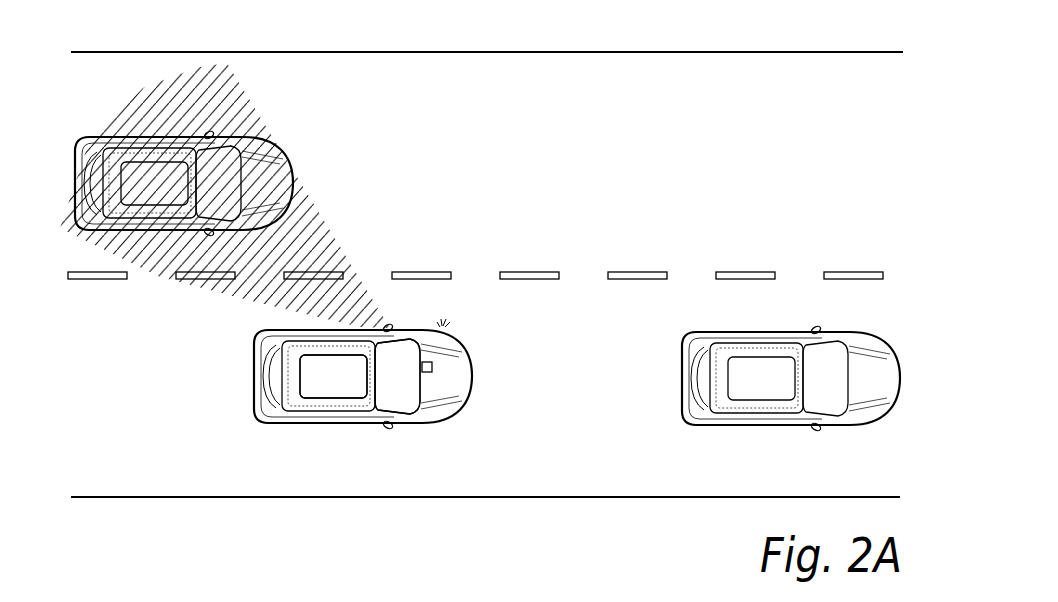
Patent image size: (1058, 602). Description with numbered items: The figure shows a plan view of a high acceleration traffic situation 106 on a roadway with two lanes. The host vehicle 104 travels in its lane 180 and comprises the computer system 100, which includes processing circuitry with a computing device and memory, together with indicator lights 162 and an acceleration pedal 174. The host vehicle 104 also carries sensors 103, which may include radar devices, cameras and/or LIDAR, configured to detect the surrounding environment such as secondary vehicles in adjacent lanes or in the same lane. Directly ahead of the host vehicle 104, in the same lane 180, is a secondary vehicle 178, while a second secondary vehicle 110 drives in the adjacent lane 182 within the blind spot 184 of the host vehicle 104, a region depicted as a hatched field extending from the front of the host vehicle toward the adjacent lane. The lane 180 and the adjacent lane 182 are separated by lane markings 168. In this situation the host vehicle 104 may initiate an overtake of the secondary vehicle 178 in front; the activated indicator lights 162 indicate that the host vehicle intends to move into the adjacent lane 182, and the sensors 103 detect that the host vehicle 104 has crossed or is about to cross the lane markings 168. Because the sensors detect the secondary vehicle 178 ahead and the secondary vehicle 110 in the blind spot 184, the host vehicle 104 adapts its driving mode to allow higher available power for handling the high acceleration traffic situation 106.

The computer system 100 is at (410, 398).
The sensors 103 is at (410, 368).
The host vehicle 104 is at (356, 392).
The high acceleration traffic situation 106 is at (575, 70).
The secondary vehicle 110 is at (175, 194).
The indicator lights 162 is at (452, 300).
The lane markings 168 is at (540, 272).
The acceleration pedal 174 is at (433, 367).
The secondary vehicle 178 is at (785, 392).
The lane 180 is at (608, 356).
The adjacent lane 182 is at (516, 186).
The blind spot 184 is at (323, 237).